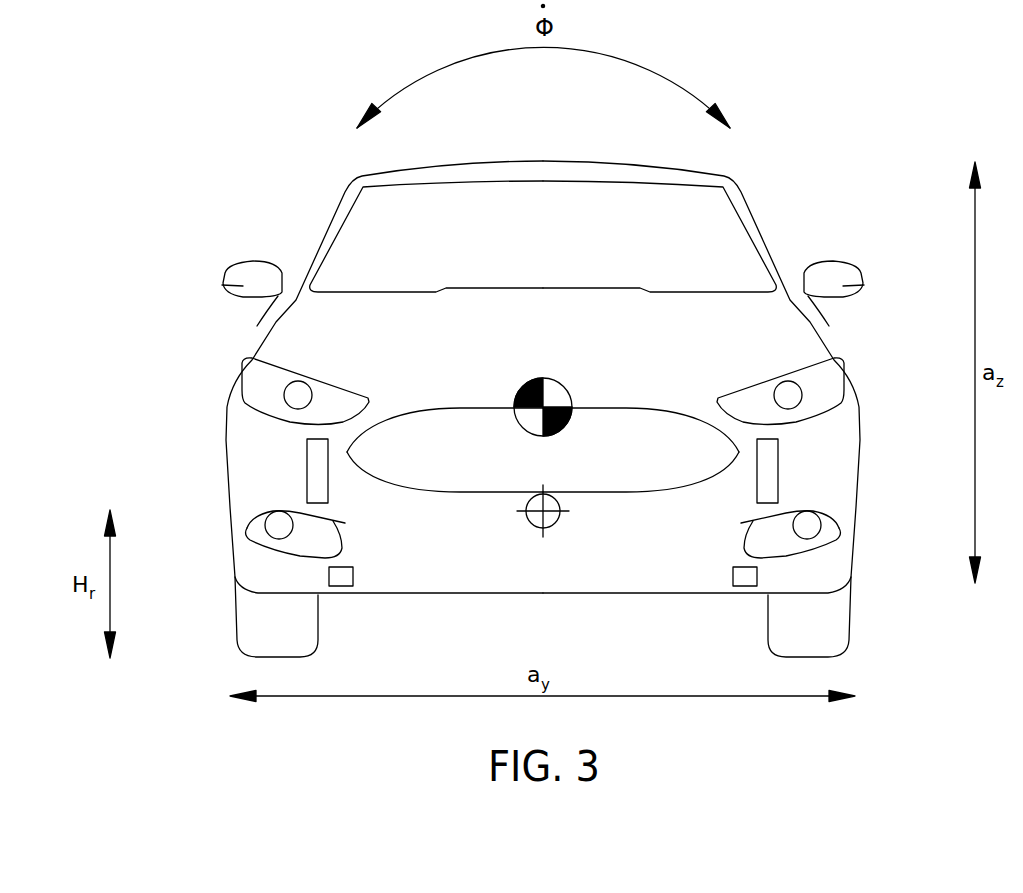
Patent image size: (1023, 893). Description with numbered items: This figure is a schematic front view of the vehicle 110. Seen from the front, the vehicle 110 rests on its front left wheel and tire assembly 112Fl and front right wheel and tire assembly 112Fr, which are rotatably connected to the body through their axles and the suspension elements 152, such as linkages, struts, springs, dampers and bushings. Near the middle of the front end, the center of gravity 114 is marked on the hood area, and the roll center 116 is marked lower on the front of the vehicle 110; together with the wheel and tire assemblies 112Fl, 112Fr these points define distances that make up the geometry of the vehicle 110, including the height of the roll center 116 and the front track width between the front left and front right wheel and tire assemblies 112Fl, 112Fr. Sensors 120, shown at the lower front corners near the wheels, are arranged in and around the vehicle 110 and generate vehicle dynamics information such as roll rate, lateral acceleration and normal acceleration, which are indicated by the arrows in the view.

The vehicle 110 is at (258, 88).
The front right wheel and tire assembly 112Fr is at (233, 597).
The front left wheel and tire assembly 112Fl is at (853, 597).
The center of gravity 114 is at (527, 382).
The roll center 116 is at (557, 522).
The sensors 120 is at (340, 586).
The suspension elements 152 is at (307, 472).